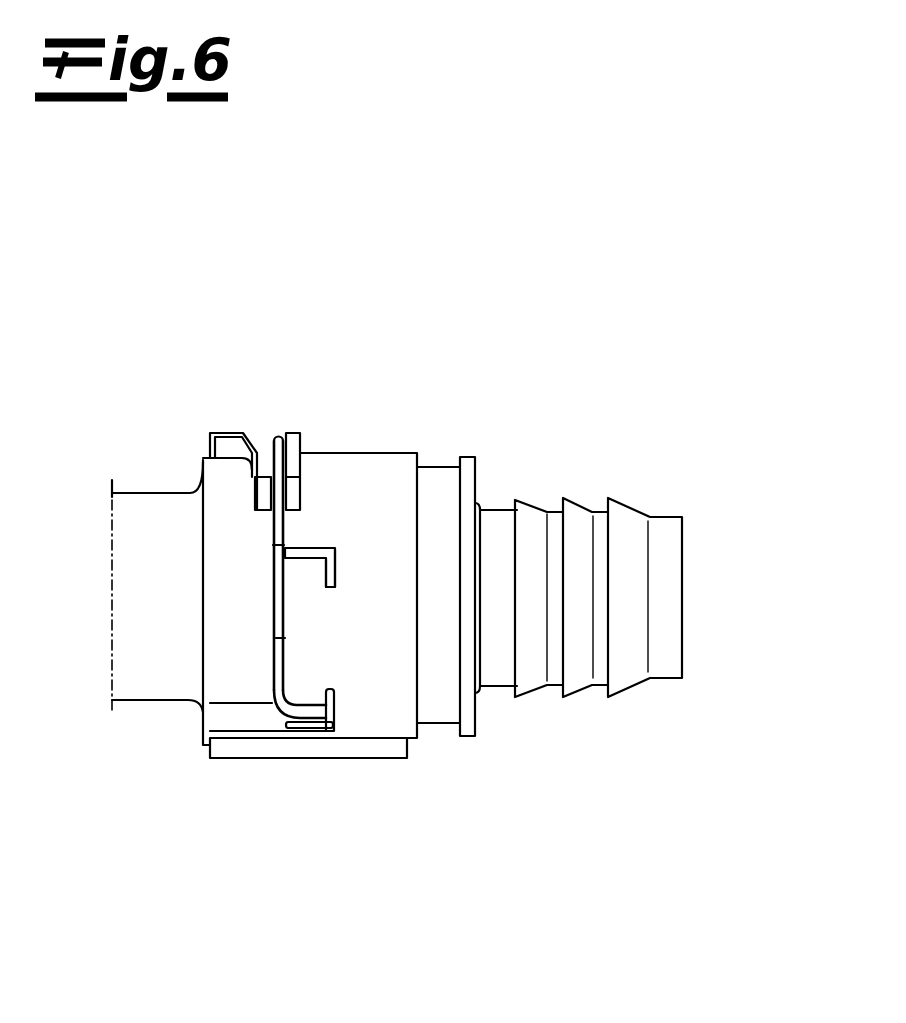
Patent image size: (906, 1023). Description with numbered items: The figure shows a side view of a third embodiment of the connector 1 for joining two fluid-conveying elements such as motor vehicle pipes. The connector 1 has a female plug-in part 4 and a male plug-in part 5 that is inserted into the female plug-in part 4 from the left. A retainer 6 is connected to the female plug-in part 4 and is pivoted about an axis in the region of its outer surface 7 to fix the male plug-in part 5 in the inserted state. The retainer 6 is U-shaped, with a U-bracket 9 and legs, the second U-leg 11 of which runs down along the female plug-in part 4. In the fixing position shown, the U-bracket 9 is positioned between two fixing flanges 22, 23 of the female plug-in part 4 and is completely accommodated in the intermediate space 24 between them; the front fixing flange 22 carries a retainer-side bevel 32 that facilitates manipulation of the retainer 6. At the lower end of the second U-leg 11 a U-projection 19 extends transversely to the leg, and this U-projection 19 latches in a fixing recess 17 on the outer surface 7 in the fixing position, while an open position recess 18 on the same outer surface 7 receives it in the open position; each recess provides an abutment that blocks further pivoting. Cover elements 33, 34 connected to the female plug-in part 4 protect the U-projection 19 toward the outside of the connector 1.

The connector 1 is at (557, 208).
The female plug-in part 4 is at (552, 427).
The male plug-in part 5 is at (127, 470).
The retainer 6 is at (288, 424).
The outer surface 7 is at (398, 680).
The U-bracket 9 is at (282, 425).
The second U-leg 11 is at (270, 602).
The fixing recess 17 is at (336, 716).
The open position recess 18 is at (308, 548).
The U-projection 19 is at (300, 718).
The front fixing flange 22 is at (240, 432).
The fixing flange 23 is at (295, 432).
The intermediate space 24 is at (271, 427).
The retainer-side bevel 32 is at (268, 433).
The cover element 33 is at (318, 729).
The cover element 34 is at (327, 547).